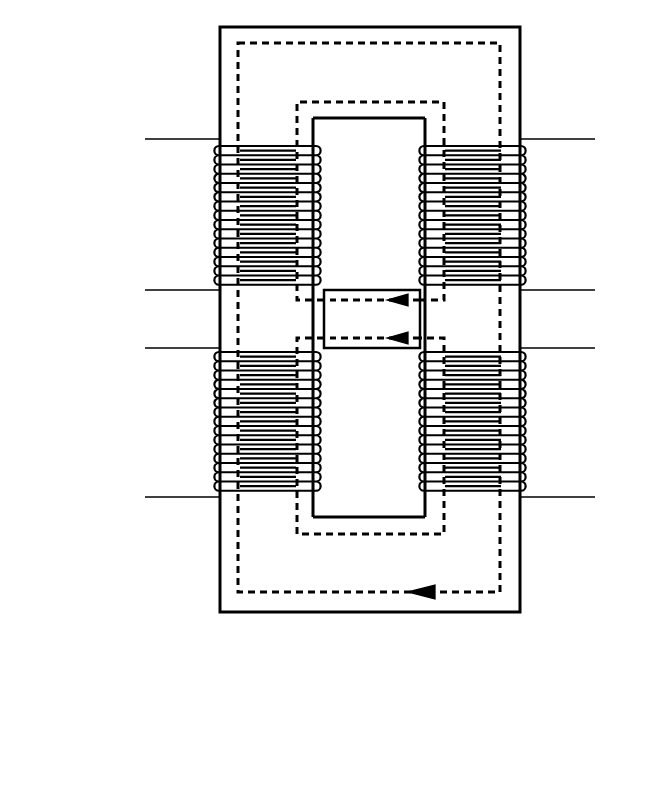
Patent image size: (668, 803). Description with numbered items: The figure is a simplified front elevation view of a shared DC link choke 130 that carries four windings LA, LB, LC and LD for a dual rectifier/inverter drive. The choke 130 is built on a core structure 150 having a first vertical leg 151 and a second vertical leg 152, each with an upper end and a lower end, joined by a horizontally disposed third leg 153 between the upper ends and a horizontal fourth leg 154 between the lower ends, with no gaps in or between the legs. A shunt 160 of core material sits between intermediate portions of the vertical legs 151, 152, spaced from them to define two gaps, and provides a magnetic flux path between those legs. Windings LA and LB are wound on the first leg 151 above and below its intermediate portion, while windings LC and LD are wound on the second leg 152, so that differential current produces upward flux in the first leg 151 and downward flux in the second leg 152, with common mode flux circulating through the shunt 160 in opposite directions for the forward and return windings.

The shared DC link choke 130 is at (138, 22).
The core structure 150 is at (220, 63).
The first vertical leg 151 is at (281, 330).
The second vertical leg 152 is at (488, 330).
The third leg 153 is at (384, 96).
The fourth leg 154 is at (384, 584).
The shunt 160 is at (384, 330).